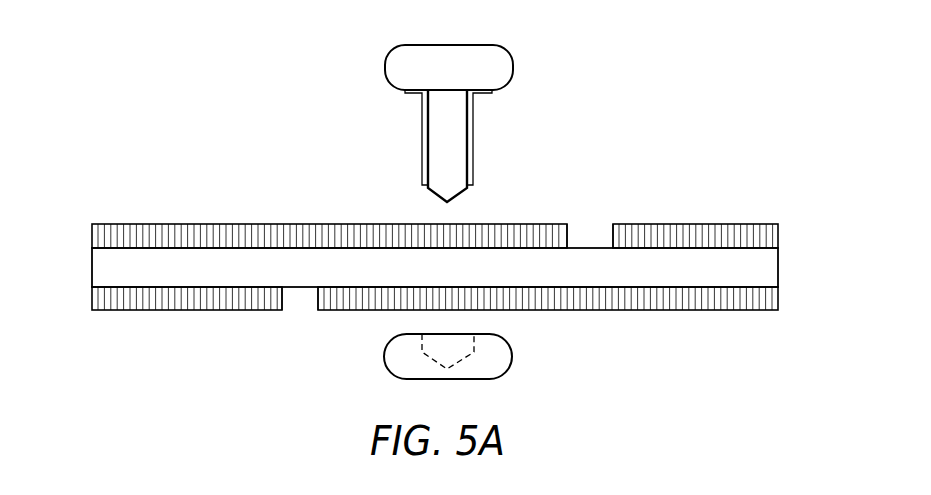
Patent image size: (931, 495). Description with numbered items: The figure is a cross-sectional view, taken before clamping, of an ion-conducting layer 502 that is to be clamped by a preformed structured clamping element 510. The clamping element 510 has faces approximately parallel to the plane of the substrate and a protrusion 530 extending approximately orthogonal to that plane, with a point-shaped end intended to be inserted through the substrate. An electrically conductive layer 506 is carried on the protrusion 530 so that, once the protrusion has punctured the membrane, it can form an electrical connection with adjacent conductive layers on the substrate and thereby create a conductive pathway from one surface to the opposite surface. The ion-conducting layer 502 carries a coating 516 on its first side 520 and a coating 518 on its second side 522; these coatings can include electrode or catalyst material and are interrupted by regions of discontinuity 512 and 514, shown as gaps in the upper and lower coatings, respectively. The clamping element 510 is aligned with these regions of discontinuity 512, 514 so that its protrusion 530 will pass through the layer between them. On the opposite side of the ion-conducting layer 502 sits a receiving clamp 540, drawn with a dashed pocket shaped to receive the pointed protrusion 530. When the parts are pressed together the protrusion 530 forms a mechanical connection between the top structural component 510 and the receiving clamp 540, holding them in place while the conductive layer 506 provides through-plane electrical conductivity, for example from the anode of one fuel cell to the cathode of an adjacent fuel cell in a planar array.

The ion-conducting layer 502 is at (103, 269).
The electrically conductive layer 506 is at (422, 140).
The preformed structured clamping element 510 is at (467, 53).
The region of discontinuity 512 is at (585, 232).
The region of discontinuity 514 is at (302, 302).
The coating 516 is at (125, 228).
The coating 518 is at (125, 305).
The first side 520 is at (752, 245).
The second side 522 is at (752, 287).
The protrusion 530 is at (458, 134).
The receiving clamp 540 is at (512, 350).